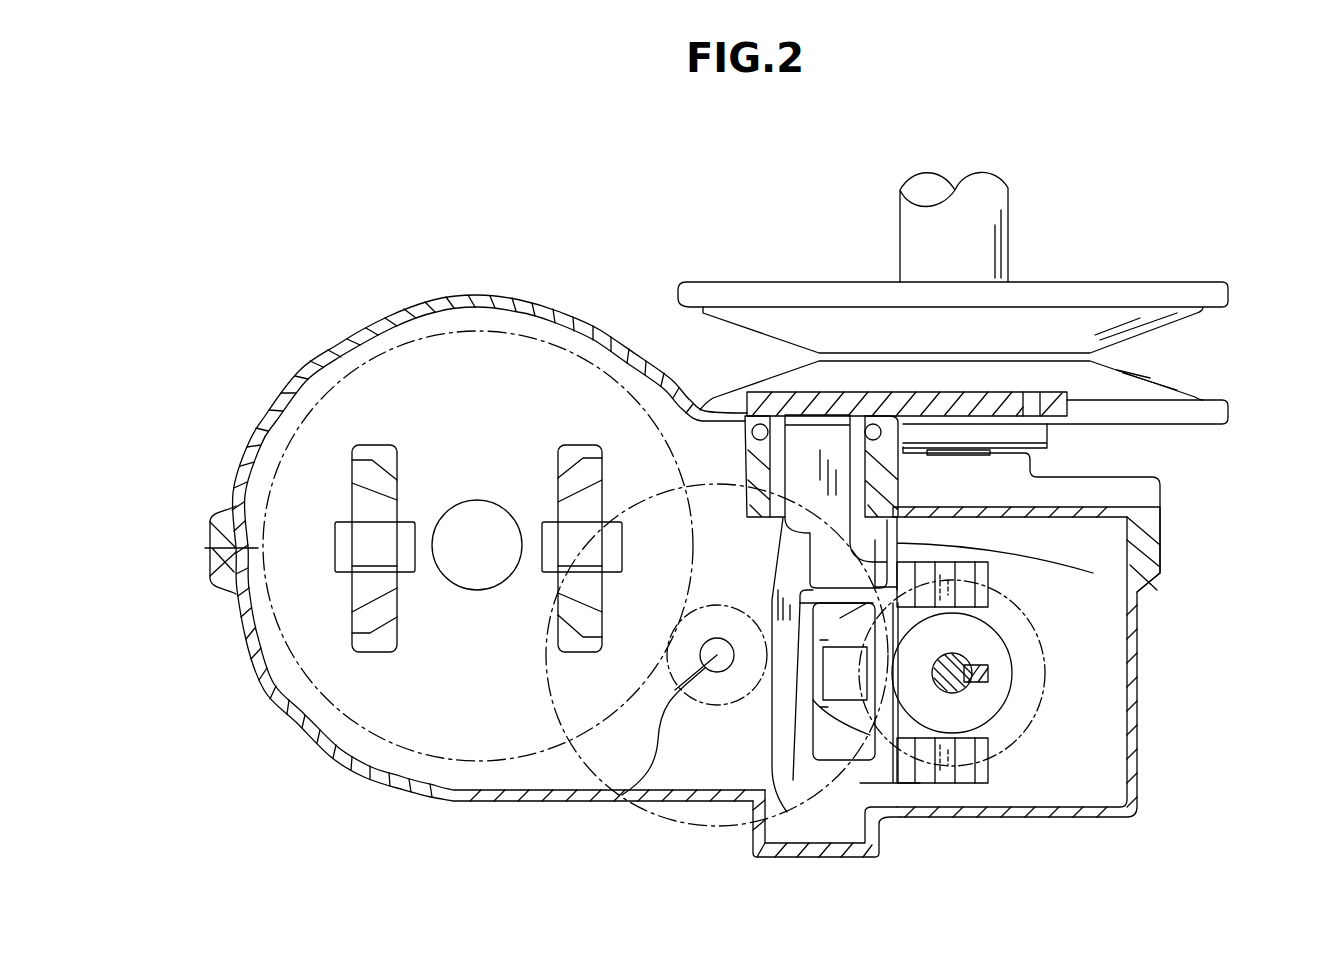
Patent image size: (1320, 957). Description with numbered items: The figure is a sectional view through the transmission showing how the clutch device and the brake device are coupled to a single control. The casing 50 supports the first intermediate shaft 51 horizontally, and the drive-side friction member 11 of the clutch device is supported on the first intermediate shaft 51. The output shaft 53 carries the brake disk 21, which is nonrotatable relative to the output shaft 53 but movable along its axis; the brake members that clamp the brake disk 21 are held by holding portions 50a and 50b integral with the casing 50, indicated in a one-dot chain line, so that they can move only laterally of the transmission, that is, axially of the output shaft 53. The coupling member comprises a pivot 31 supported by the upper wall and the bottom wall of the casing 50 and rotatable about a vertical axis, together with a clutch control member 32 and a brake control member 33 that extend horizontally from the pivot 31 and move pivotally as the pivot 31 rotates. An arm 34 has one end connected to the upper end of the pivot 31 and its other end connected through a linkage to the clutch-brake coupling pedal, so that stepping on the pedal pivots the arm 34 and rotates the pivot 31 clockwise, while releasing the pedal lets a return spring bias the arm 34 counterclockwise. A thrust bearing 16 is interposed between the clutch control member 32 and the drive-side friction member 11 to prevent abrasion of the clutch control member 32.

The casing 50 is at (455, 801).
The holding portion 50a is at (875, 540).
The holding portion 50b is at (867, 853).
The arm 34 is at (990, 400).
The brake disk 21 is at (613, 523).
The output shaft 53 is at (570, 727).
The pivot 31 is at (783, 697).
The brake control member 33 is at (805, 772).
The clutch control member 32 is at (963, 777).
The thrust bearing 16 is at (1005, 703).
The drive-side friction member 11 is at (1017, 727).
The first intermediate shaft 51 is at (1003, 680).